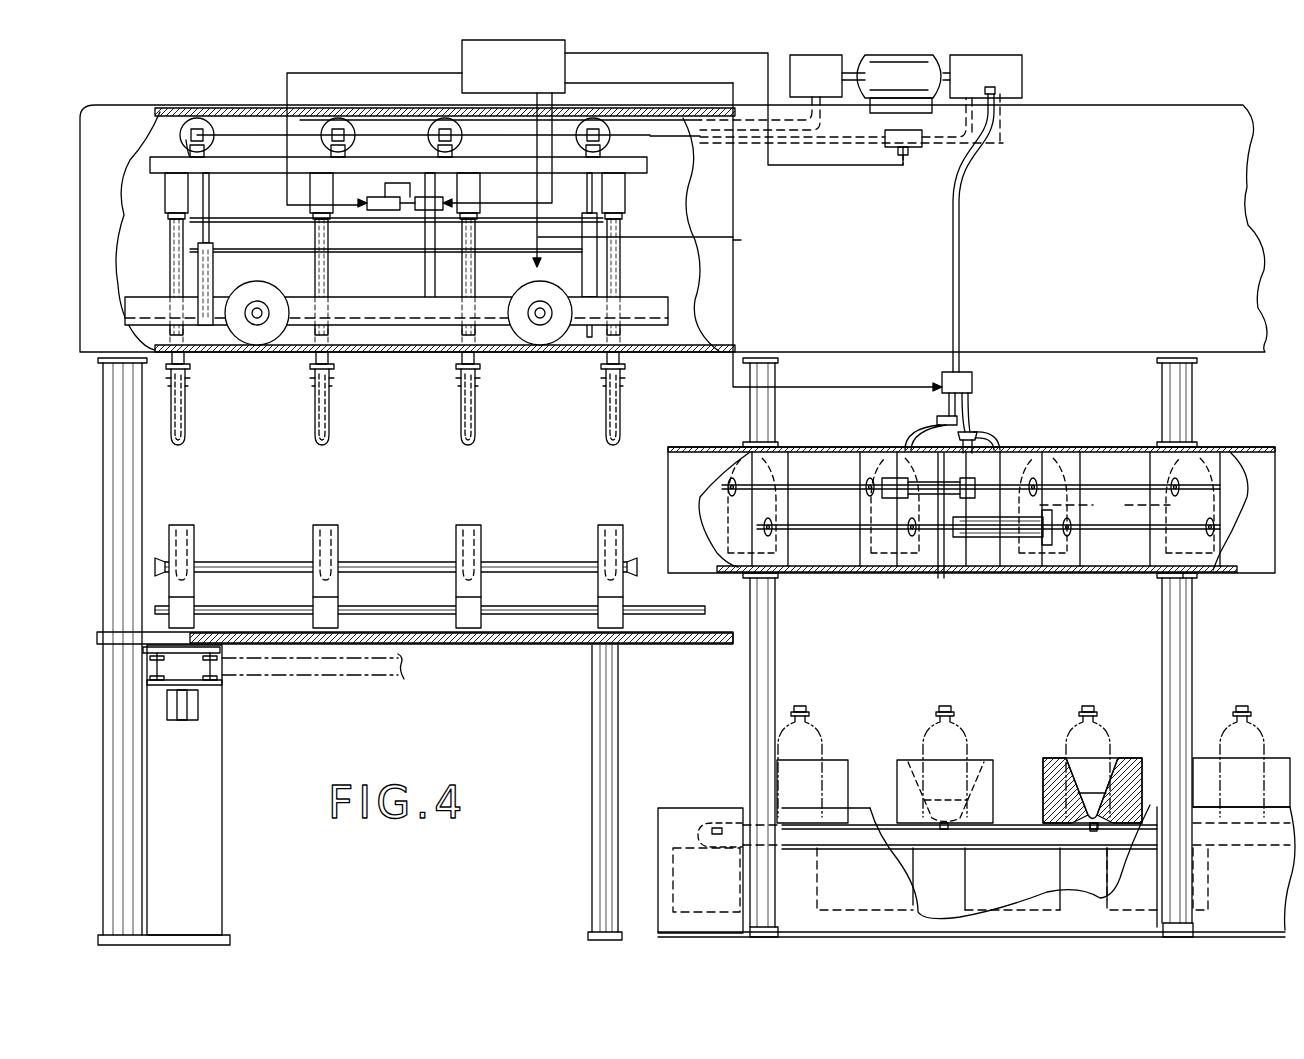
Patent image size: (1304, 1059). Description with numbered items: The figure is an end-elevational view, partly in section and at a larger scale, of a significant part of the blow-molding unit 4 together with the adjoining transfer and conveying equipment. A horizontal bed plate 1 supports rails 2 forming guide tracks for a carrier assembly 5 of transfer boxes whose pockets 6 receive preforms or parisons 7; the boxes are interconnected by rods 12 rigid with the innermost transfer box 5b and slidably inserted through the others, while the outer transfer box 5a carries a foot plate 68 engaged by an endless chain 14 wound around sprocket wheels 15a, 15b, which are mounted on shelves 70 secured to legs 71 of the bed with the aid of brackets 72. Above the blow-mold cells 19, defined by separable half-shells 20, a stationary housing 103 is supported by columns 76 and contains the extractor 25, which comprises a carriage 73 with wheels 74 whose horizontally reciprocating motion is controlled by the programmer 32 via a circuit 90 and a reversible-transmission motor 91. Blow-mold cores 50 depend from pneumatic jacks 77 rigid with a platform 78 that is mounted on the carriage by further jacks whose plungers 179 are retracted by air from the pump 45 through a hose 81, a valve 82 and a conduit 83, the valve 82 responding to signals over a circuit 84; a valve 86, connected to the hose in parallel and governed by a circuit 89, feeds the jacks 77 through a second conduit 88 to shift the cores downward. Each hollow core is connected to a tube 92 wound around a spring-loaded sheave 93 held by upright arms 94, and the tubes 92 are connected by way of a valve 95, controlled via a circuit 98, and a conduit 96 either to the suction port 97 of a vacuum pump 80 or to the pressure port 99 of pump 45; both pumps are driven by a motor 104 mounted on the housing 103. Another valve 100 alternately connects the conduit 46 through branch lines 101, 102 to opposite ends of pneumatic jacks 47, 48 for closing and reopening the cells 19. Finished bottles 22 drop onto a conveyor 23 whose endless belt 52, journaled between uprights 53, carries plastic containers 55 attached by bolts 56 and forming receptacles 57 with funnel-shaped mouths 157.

The bed plate 1 is at (655, 645).
The rails 2 is at (507, 613).
The blow-molding unit 4 is at (990, 594).
The carrier assembly 5 is at (395, 549).
The outer transfer box 5a is at (181, 535).
The innermost transfer box 5b is at (612, 535).
The pockets 6 is at (466, 549).
The parisons 7 is at (605, 398).
The rods 12 is at (247, 562).
The endless chain 14 is at (361, 679).
The sprocket wheel 15a is at (152, 670).
The sprocket wheel 15b is at (216, 672).
The blow-molding cells 19 is at (1105, 505).
The half-shells 20 is at (1205, 553).
The bottles 22 is at (920, 740).
The conveyor 23 is at (873, 722).
The extractor 25 is at (151, 373).
The programmer 32 is at (462, 50).
The pump 45 is at (1022, 72).
The conduit 46 is at (959, 277).
The pneumatic jack 47 is at (882, 496).
The pneumatic jack 48 is at (1003, 574).
The blow-mold cores 50 is at (328, 410).
The endless belt 52 is at (718, 823).
The uprights 53 is at (676, 826).
The plastic containers 55 is at (1208, 786).
The bolts 56 is at (944, 830).
The receptacles 57 is at (1083, 803).
The foot plate 68 is at (200, 648).
The shelves 70 is at (205, 695).
The legs 71 is at (213, 866).
The brackets 72 is at (173, 722).
The carriage 73 is at (648, 300).
The wheels 74 is at (258, 293).
The columns 76 is at (750, 410).
The pneumatic jacks 77 is at (178, 267).
The platform 78 is at (160, 174).
The vacuum pump 80 is at (812, 55).
The hose 81 is at (631, 119).
The valve 82 is at (441, 201).
The conduit 83 is at (435, 250).
The circuit 84 is at (552, 178).
The valve 86 is at (376, 197).
The second conduit 88 is at (222, 218).
The circuit 89 is at (287, 201).
The circuit 90 is at (538, 237).
The reversible-transmission motor 91 is at (545, 283).
The tube 92 is at (612, 142).
The spring-loaded sheave 93 is at (194, 117).
The upright arms 94 is at (188, 148).
The valve 95 is at (910, 149).
The conduit 96 is at (674, 135).
The suction port 97 is at (814, 124).
The circuit 98 is at (858, 165).
The pressure port 99 is at (1004, 143).
The valve 100 is at (968, 385).
The branch line 101 is at (992, 432).
The branch line 102 is at (948, 527).
The stationary housing 103 is at (1210, 212).
The motor 104 is at (905, 68).
The funnel-shaped mouths 157 is at (1063, 768).
The plungers 179 is at (211, 223).